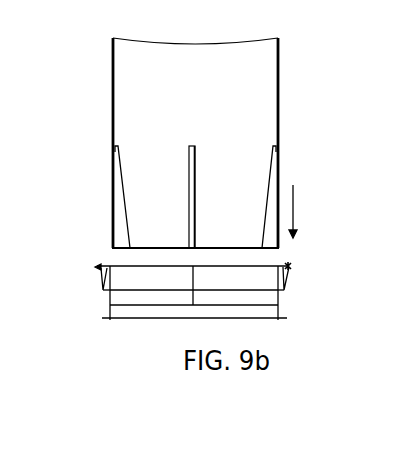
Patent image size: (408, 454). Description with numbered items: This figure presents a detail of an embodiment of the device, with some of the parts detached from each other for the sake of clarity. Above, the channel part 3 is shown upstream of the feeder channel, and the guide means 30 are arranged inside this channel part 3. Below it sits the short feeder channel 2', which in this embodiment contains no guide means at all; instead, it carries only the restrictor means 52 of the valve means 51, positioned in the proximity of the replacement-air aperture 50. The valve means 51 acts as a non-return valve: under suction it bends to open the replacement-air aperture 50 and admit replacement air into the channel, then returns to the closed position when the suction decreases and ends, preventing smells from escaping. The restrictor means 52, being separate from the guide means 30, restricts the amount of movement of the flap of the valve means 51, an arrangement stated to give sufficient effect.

The channel part 3 is at (272, 128).
The guide means 30 is at (120, 195).
The short feeder channel 2' is at (161, 259).
The replacement-air aperture 50 is at (289, 265).
The valve means 51 is at (206, 254).
The restrictor means 52 is at (110, 305).